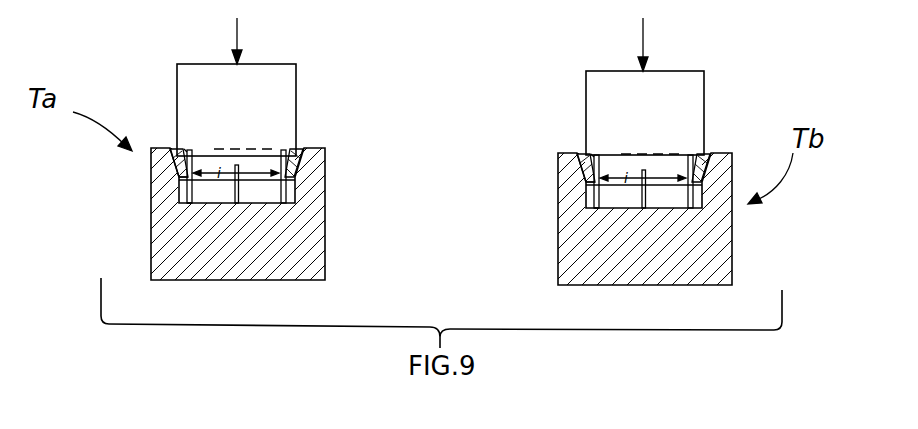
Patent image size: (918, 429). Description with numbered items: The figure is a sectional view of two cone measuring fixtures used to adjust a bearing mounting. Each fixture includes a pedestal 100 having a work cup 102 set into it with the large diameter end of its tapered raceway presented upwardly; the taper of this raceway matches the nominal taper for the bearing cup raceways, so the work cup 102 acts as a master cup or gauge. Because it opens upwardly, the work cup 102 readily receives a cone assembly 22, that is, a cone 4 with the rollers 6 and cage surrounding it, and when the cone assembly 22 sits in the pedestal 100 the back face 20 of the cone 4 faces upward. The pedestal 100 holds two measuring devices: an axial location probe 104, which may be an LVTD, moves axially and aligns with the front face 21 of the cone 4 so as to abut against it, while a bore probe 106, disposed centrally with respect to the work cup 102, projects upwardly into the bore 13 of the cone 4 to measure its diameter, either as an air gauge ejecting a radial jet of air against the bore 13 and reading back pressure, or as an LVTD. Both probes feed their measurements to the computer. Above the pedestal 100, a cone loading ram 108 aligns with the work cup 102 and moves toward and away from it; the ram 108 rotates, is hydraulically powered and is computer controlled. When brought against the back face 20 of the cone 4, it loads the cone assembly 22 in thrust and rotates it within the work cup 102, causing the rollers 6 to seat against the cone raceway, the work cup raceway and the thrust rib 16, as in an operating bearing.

The pedestal 100 is at (311, 241).
The work cup 102 is at (183, 160).
The axial location probe 104 is at (279, 190).
The bore probe 106 is at (231, 188).
The cone loading ram 108 is at (280, 92).
The thrust rib 16 is at (190, 151).
The back face 20 is at (289, 151).
The cone assembly 22 is at (303, 146).
The cone 4 is at (187, 152).
The bore 13 is at (198, 165).
The rollers 6 is at (178, 170).
The front face 21 is at (188, 204).